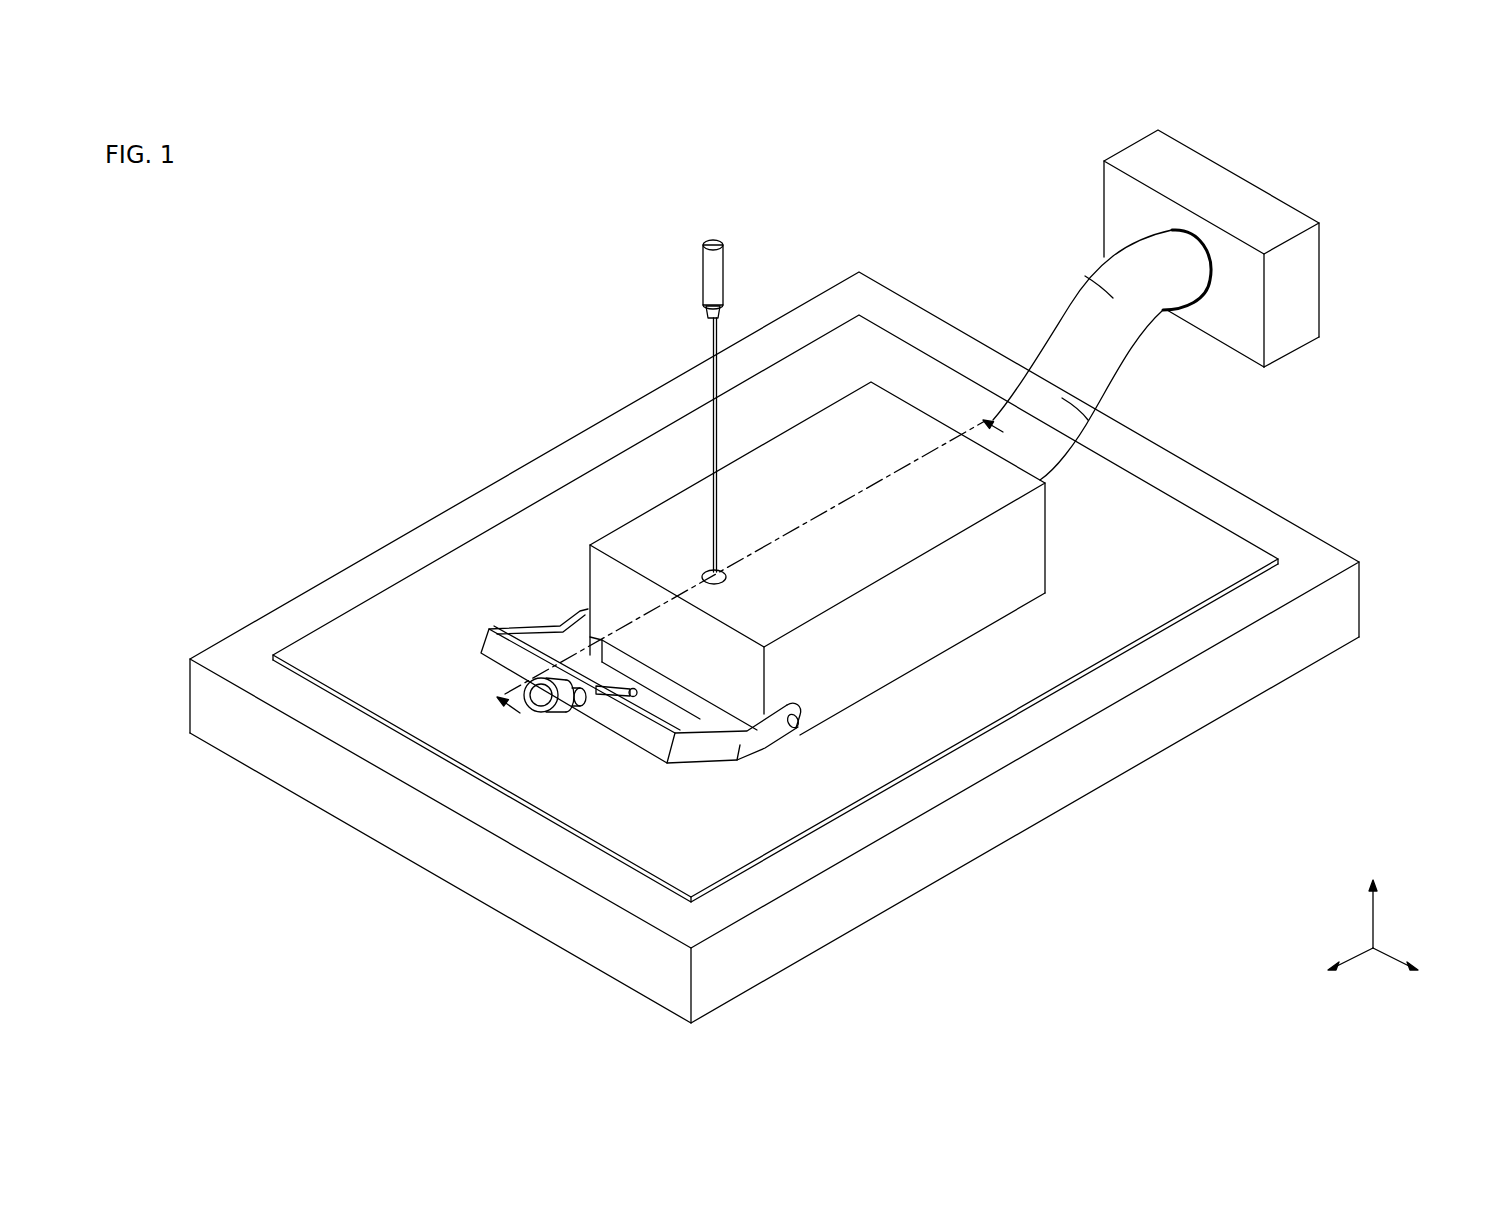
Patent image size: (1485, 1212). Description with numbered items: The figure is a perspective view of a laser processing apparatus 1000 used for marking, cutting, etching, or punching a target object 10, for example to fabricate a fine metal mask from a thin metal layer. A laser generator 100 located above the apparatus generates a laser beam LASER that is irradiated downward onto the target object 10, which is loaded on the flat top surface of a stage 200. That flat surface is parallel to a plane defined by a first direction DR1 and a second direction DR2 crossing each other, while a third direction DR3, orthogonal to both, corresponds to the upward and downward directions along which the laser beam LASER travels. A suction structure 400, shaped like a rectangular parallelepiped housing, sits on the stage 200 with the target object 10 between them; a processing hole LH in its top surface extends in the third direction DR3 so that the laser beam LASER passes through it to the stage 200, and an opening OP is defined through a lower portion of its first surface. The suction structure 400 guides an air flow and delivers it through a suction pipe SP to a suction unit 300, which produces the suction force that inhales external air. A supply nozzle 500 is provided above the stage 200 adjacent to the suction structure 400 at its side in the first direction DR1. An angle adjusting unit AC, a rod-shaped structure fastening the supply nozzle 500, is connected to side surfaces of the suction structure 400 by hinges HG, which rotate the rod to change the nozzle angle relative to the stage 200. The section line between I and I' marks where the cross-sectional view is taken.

The laser processing apparatus 1000 is at (890, 268).
The laser generator 100 is at (712, 242).
The laser beam LASER is at (705, 331).
The stage 200 is at (1343, 604).
The target object 10 is at (1132, 615).
The suction unit 300 is at (1239, 197).
The suction pipe SP is at (1105, 348).
The suction structure 400 is at (955, 597).
The processing hole LH is at (710, 568).
The opening OP is at (690, 697).
The hinges HG is at (800, 723).
The angle adjusting unit AC is at (510, 658).
The supply nozzle 500 is at (532, 703).
The section line I is at (508, 717).
The section line I' is at (1002, 434).
The first direction DR1 is at (1330, 969).
The second direction DR2 is at (1424, 969).
The third direction DR3 is at (1375, 902).